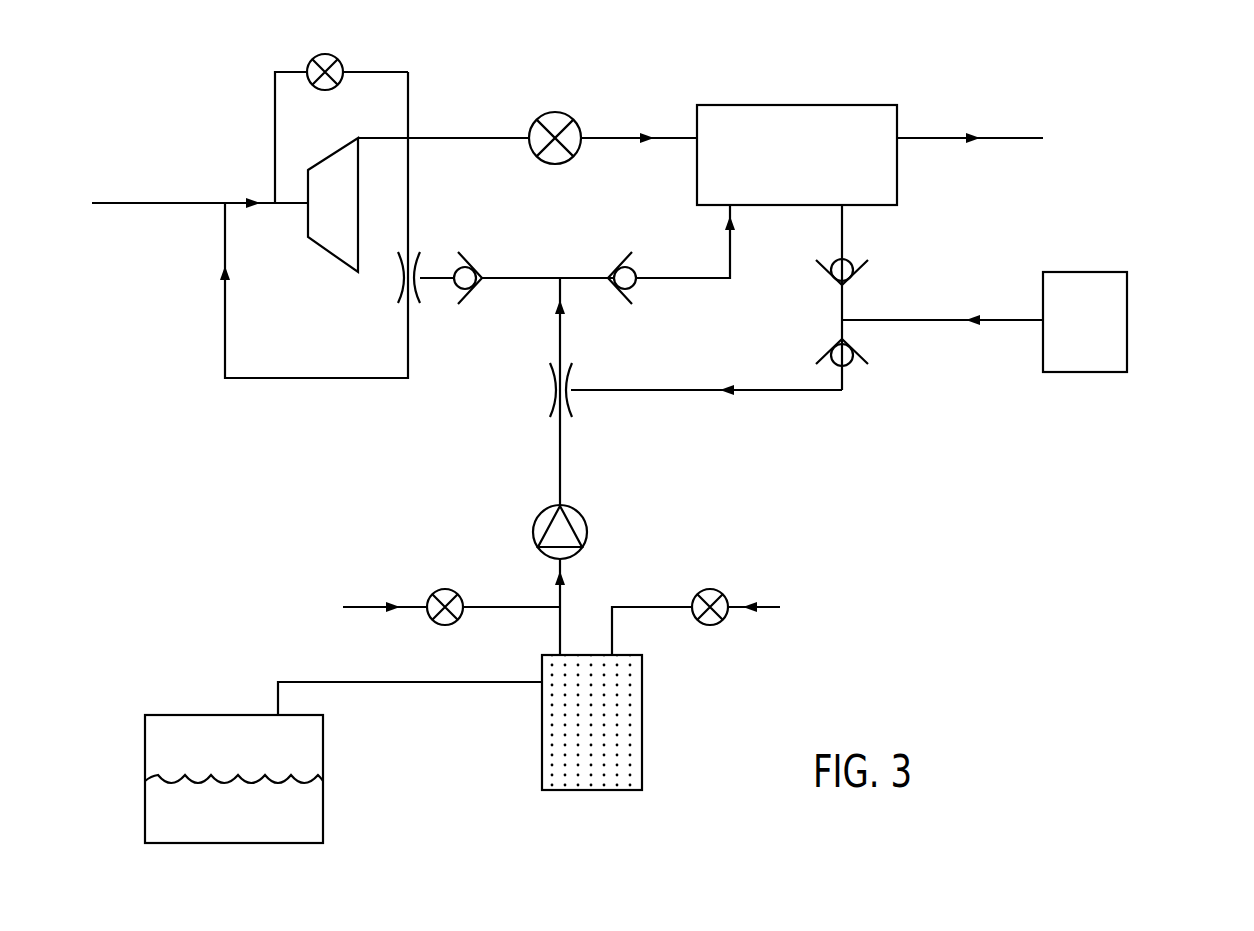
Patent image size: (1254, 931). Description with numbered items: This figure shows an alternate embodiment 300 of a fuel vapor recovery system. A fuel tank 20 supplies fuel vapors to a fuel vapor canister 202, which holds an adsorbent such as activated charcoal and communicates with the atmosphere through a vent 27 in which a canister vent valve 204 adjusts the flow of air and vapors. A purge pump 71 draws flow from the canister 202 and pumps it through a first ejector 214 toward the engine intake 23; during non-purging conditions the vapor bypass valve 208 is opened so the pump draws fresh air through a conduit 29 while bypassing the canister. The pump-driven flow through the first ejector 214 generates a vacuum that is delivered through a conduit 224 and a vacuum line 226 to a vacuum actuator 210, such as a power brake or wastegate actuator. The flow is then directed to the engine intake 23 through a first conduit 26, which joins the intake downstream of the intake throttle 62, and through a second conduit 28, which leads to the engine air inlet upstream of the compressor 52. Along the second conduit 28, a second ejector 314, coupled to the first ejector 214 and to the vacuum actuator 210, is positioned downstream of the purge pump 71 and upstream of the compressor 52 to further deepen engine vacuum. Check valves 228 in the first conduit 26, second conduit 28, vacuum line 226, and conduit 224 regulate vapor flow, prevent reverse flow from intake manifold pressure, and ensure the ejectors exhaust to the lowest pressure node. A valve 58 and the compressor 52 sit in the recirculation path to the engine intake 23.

The alternate embodiment of the fuel vapor recovery system 300 is at (1180, 87).
The compressor recirculation valve 58 is at (326, 53).
The intake throttle 62 is at (552, 112).
The engine intake 23 is at (808, 167).
The compressor 52 is at (345, 266).
The second conduit 28 is at (293, 378).
The second ejector 314 is at (418, 246).
The check valve 228 is at (477, 258).
The first conduit 26 is at (700, 278).
The first ejector 214 is at (570, 358).
The conduit 224 is at (672, 390).
The vacuum line 226 is at (903, 319).
The vacuum actuator 210 is at (1102, 334).
The purge pump 71 is at (578, 513).
The vapor bypass valve 208 is at (445, 588).
The conduit 29 is at (502, 606).
The vent 27 is at (632, 606).
The canister vent valve 204 is at (712, 588).
The fuel vapor canister 202 is at (643, 719).
The fuel tank 20 is at (178, 714).